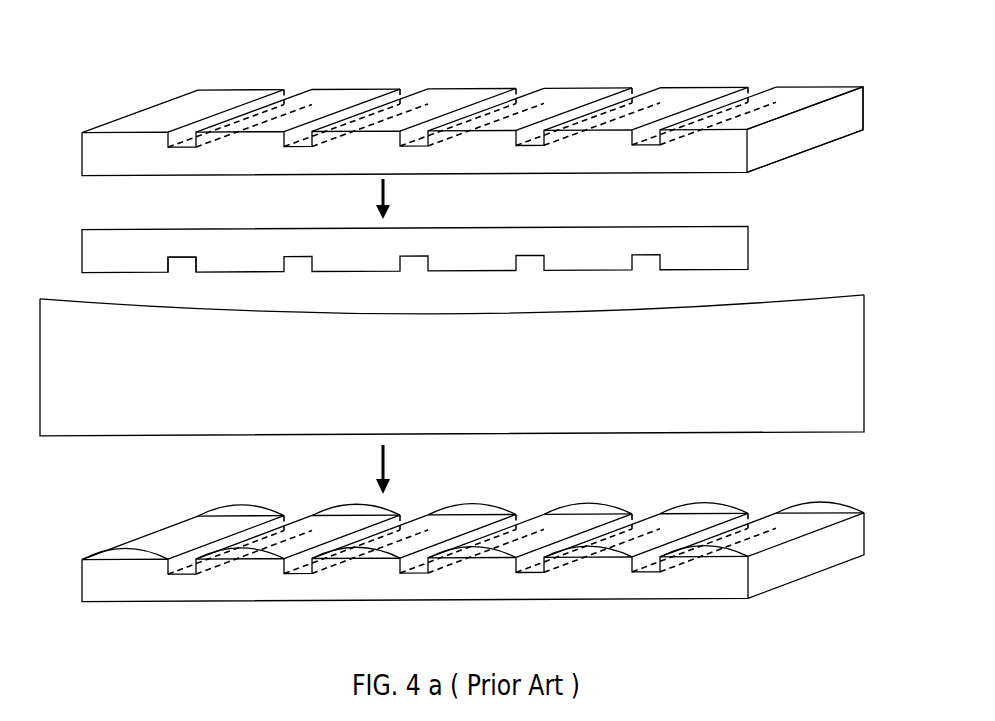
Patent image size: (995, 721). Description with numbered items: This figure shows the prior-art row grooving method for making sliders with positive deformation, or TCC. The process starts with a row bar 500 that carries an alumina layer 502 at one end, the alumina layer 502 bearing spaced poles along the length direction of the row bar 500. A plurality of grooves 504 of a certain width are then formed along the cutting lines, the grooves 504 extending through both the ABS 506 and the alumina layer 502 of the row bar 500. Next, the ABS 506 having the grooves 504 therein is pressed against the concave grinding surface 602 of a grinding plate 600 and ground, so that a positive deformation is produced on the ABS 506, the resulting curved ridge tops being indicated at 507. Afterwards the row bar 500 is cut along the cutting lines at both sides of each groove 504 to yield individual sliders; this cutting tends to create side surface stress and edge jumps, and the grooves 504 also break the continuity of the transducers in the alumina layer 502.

The row bar 500 is at (486, 70).
The alumina layer 502 is at (748, 143).
The grooves 504 is at (650, 137).
The ABS 506 is at (188, 113).
The domed lens ridges 507 is at (710, 507).
The grinding plate 600 is at (693, 335).
The concave grinding surface 602 is at (383, 316).